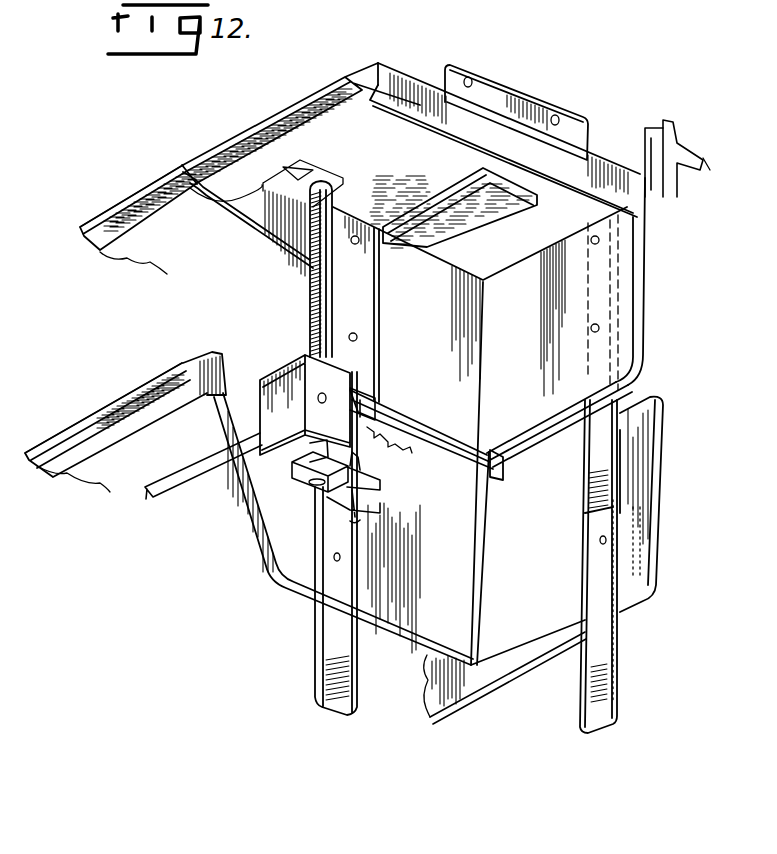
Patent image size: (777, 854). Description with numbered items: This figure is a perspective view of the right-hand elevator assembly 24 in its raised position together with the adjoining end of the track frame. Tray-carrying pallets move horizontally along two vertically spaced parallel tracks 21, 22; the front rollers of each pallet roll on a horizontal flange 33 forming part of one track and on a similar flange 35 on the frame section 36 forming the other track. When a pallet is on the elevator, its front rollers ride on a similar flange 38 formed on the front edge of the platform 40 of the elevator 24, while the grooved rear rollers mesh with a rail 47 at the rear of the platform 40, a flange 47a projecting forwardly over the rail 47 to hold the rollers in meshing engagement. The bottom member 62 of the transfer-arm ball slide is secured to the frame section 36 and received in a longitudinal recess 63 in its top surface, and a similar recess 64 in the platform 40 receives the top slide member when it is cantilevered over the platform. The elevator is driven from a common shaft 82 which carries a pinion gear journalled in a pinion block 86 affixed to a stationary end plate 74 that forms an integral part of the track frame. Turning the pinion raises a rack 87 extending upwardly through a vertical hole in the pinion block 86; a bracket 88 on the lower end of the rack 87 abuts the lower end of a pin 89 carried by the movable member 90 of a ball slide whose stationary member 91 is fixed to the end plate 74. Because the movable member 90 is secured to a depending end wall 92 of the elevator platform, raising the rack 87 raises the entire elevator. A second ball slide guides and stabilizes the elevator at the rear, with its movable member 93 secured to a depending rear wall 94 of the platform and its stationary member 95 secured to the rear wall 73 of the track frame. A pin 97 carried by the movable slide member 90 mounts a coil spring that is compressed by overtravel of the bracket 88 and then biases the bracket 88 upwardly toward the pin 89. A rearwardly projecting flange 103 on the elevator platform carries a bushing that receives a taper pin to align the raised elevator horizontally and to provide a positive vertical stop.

The track 21 is at (150, 376).
The track 22 is at (73, 222).
The right-hand elevator assembly 24 is at (553, 92).
The horizontal flange 33 is at (124, 203).
The flange 35 is at (65, 427).
The frame section 36 is at (229, 352).
The flange 38 is at (258, 103).
The platform 40 is at (397, 137).
The rail 47 is at (655, 178).
The flange 47a is at (670, 120).
The bottom member of ball slide 62 is at (413, 450).
The longitudinal recess 63 is at (400, 440).
The recess 64 is at (470, 205).
The rear wall of track frame 73 is at (661, 530).
The stationary end plate 74 is at (267, 552).
The common shaft 82 is at (157, 499).
The pinion block 86 is at (280, 378).
The rack 87 is at (309, 289).
The bracket 88 is at (293, 477).
The pin 89 is at (385, 468).
The movable member of ball slide 90 is at (357, 415).
The stationary member of ball slide 91 is at (325, 704).
The depending end wall 92 is at (445, 442).
The movable member of second ball slide 93 is at (622, 392).
The depending rear wall 94 is at (643, 320).
The stationary member of second ball slide 95 is at (618, 683).
The pin 97 is at (347, 512).
The rearwardly projecting flange 103 is at (707, 158).